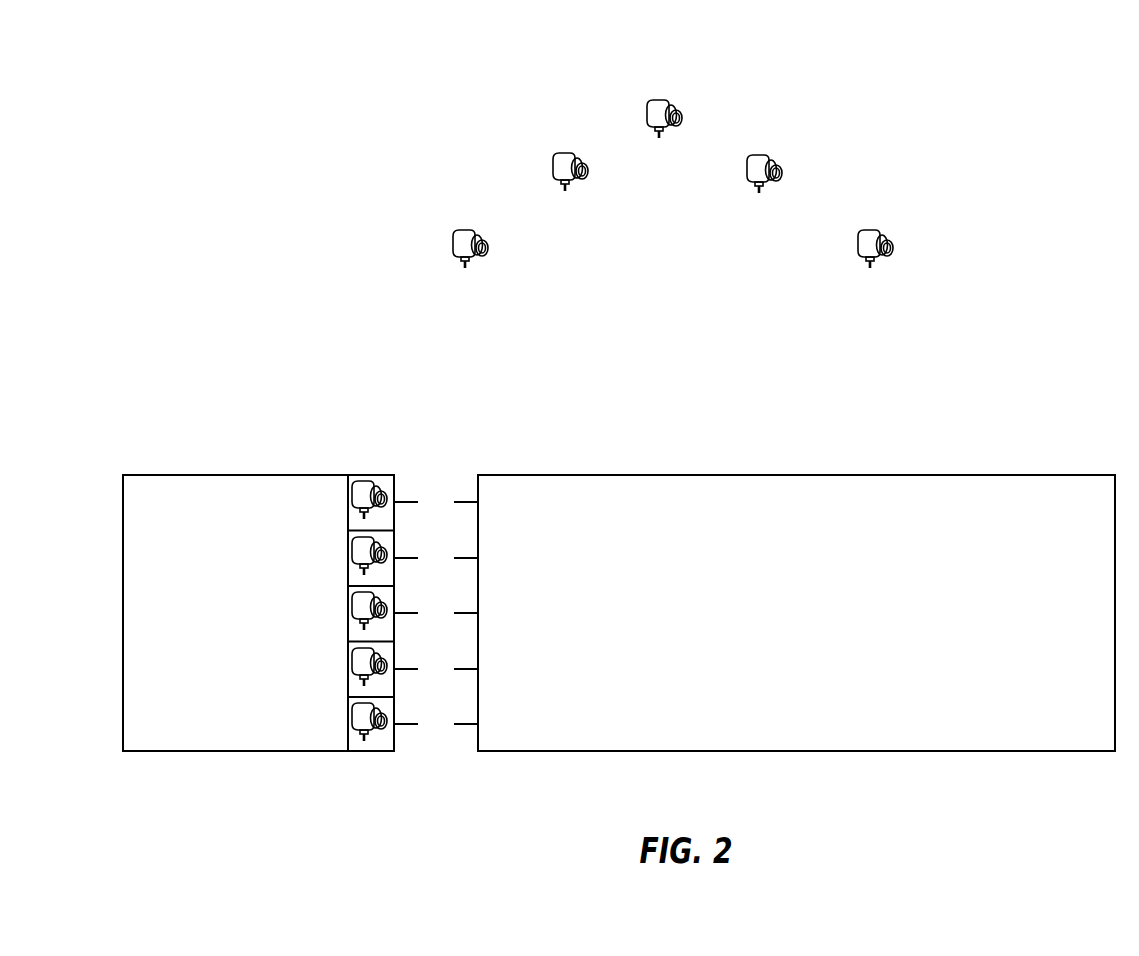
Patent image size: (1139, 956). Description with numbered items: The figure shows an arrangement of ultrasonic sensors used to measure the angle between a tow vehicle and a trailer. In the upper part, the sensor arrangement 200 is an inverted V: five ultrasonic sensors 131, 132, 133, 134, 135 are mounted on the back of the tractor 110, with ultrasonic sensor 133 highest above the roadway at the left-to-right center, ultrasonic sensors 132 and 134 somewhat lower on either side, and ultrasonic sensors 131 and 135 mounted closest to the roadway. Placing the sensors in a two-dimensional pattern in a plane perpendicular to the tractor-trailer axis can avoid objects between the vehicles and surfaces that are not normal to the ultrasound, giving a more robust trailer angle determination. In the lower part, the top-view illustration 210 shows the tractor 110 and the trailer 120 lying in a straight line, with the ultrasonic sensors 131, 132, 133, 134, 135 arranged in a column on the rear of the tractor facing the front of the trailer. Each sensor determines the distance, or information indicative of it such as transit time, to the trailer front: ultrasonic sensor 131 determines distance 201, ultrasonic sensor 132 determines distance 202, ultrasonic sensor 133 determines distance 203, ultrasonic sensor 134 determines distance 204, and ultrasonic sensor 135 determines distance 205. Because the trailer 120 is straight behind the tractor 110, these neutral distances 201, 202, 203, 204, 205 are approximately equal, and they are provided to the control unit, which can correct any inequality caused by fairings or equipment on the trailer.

The sensor arrangement 200 is at (621, 28).
The top-view illustration of tractor trailer 210 is at (608, 426).
The tractor 110 is at (211, 640).
The trailer 120 is at (779, 644).
The ultrasonic sensor 131 is at (455, 236).
The ultrasonic sensor 132 is at (555, 160).
The ultrasonic sensor 133 is at (649, 107).
The ultrasonic sensor 134 is at (762, 160).
The ultrasonic sensor 135 is at (876, 233).
The distance 201 is at (436, 503).
The distance 202 is at (436, 559).
The distance 203 is at (436, 614).
The distance 204 is at (436, 670).
The distance 205 is at (436, 725).